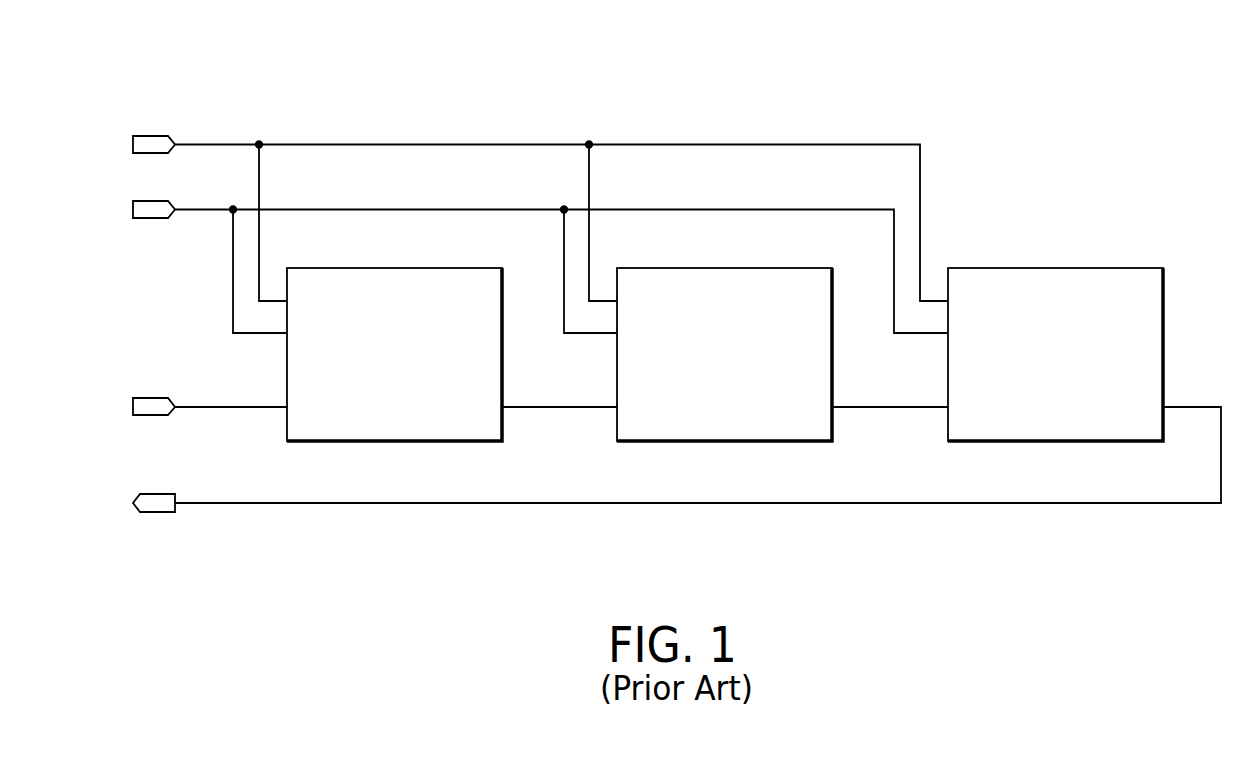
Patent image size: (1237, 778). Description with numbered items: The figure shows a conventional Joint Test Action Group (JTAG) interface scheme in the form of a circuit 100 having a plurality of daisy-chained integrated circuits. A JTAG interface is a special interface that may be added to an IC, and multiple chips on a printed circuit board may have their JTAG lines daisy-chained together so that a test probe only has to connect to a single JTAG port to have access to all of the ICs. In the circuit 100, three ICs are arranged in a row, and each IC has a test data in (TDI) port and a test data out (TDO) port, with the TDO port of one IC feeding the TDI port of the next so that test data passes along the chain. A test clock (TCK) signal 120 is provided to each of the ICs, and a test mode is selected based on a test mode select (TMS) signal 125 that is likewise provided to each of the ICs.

The circuit 100 is at (1101, 44).
The test clock (TCK) signal 120 is at (173, 203).
The test mode select (TMS) signal 125 is at (172, 138).